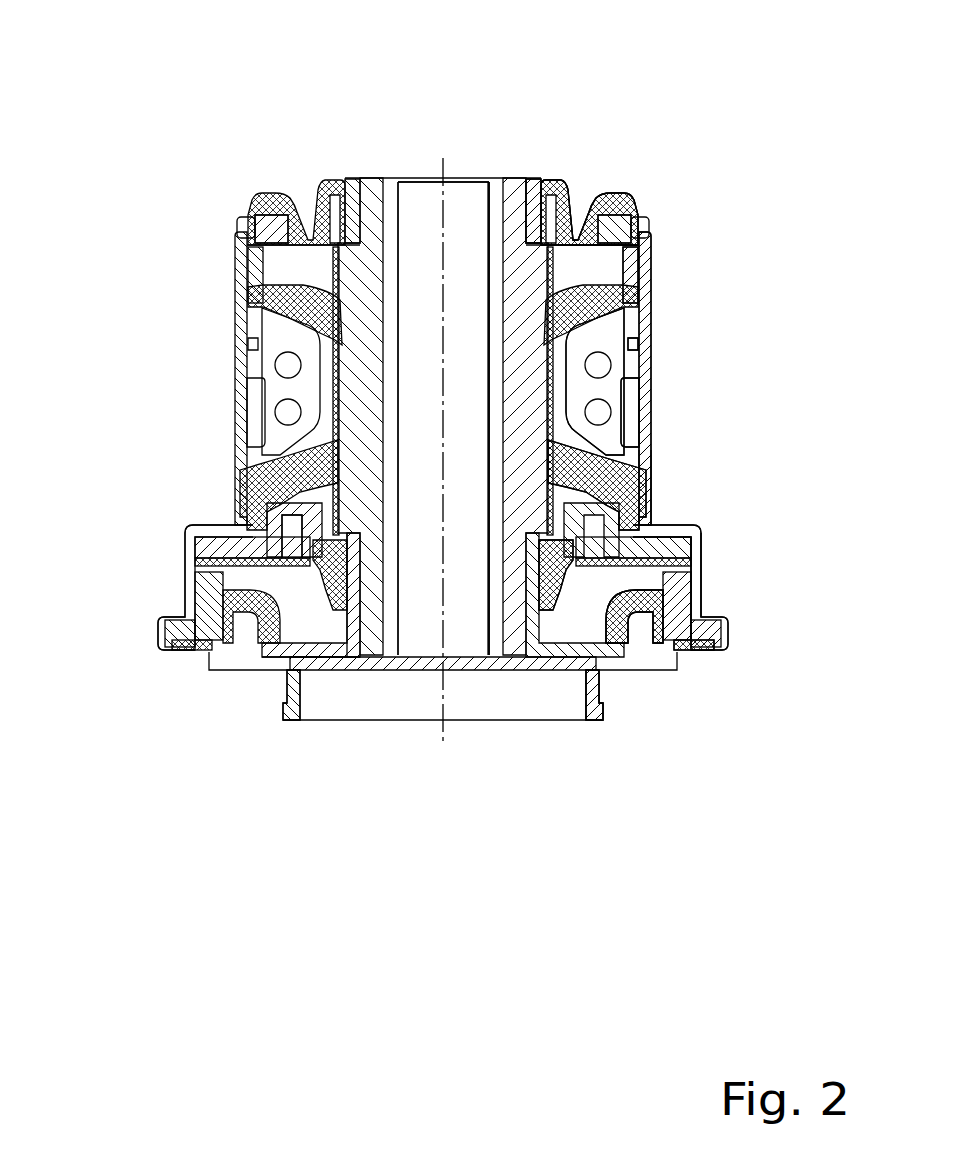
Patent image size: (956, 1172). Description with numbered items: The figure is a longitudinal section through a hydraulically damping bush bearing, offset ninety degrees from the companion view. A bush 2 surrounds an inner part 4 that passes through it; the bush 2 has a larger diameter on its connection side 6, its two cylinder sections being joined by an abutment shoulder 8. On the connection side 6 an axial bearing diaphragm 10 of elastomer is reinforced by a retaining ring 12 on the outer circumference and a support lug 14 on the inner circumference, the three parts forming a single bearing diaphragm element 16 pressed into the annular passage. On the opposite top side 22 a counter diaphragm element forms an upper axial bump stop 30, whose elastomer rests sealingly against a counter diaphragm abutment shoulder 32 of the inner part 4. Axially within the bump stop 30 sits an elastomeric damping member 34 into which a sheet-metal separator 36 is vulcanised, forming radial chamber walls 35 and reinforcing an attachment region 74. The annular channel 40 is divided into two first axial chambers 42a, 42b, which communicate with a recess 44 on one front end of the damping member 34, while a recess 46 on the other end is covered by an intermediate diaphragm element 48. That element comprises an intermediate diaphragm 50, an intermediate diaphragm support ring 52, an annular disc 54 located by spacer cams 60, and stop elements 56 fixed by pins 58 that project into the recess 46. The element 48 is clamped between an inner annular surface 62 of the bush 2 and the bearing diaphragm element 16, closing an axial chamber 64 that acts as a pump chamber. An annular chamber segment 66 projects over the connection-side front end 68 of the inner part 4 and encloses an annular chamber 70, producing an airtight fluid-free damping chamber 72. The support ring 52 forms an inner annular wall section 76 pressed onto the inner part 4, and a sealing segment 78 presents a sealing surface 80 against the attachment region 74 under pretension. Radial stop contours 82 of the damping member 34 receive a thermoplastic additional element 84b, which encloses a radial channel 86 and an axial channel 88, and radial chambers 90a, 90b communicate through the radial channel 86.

The bush 2 is at (257, 215).
The inner part 4 is at (370, 197).
The connection side 6 is at (547, 735).
The abutment shoulder 8 is at (690, 514).
The axial bearing diaphragm 10 is at (272, 655).
The retaining ring 12 is at (195, 652).
The support lug 14 is at (290, 657).
The bearing diaphragm element 16 is at (247, 630).
The top side 22 is at (470, 162).
The upper axial bump stop 30 is at (620, 178).
The counter diaphragm abutment shoulder 32 is at (530, 178).
The elastomeric damping member 34 is at (240, 312).
The radial chamber walls 35 is at (240, 223).
The separator 36 is at (256, 193).
The annular channel 40 is at (300, 213).
The first axial chamber 42a is at (334, 182).
The first axial chamber 42b is at (552, 188).
The recess 44 is at (313, 270).
The recess 46 is at (605, 445).
The intermediate diaphragm element 48 is at (243, 548).
The intermediate diaphragm 50 is at (172, 653).
The intermediate diaphragm support ring 52 is at (355, 655).
The annular disc 54 is at (186, 540).
The stop elements 56 is at (238, 490).
The pins 58 is at (643, 630).
The spacer cams 60 is at (162, 617).
The inner annular surface 62 is at (703, 583).
The axial chamber 64 is at (205, 653).
The annular chamber segment 66 is at (560, 583).
The connection-side front end 68 is at (338, 575).
The annular chamber 70 is at (517, 540).
The fluid-free damping chamber 72 is at (315, 442).
The attachment region 74 is at (637, 618).
The inner annular wall section 76 is at (520, 560).
The sealing segment 78 is at (237, 518).
The sealing surface 80 is at (650, 507).
The radial stop contours 82 is at (575, 400).
The additional element 84b is at (245, 367).
The radial channel 86 is at (240, 333).
The axial channel 88 is at (247, 390).
The radial chamber 90a is at (238, 405).
The radial chamber 90b is at (647, 280).